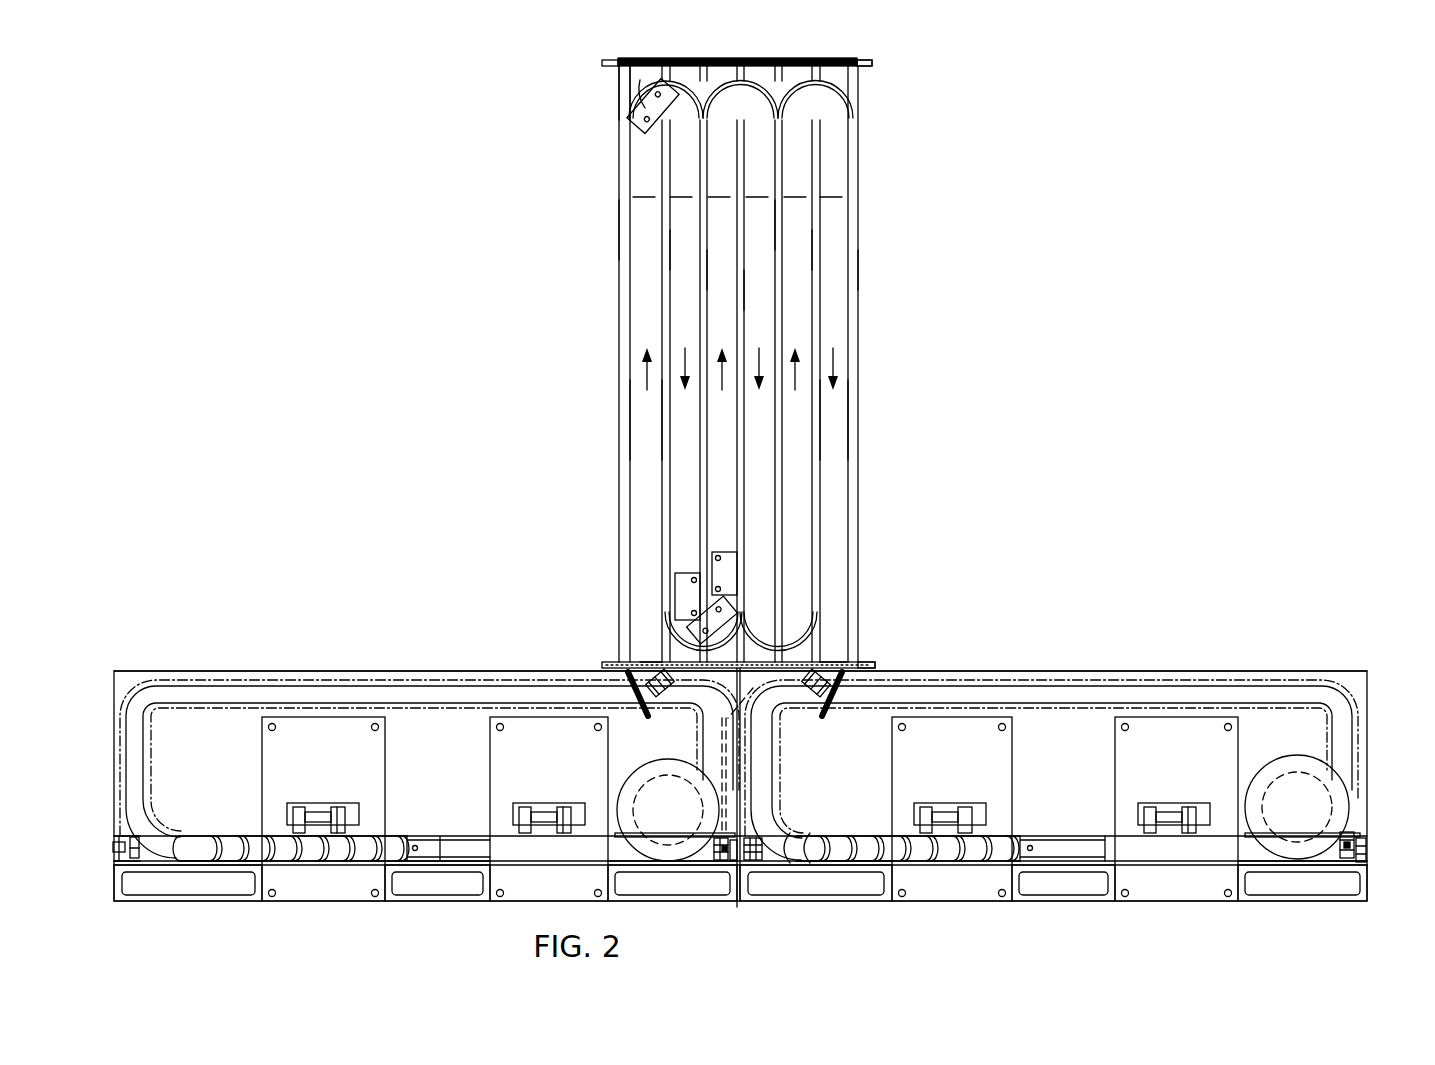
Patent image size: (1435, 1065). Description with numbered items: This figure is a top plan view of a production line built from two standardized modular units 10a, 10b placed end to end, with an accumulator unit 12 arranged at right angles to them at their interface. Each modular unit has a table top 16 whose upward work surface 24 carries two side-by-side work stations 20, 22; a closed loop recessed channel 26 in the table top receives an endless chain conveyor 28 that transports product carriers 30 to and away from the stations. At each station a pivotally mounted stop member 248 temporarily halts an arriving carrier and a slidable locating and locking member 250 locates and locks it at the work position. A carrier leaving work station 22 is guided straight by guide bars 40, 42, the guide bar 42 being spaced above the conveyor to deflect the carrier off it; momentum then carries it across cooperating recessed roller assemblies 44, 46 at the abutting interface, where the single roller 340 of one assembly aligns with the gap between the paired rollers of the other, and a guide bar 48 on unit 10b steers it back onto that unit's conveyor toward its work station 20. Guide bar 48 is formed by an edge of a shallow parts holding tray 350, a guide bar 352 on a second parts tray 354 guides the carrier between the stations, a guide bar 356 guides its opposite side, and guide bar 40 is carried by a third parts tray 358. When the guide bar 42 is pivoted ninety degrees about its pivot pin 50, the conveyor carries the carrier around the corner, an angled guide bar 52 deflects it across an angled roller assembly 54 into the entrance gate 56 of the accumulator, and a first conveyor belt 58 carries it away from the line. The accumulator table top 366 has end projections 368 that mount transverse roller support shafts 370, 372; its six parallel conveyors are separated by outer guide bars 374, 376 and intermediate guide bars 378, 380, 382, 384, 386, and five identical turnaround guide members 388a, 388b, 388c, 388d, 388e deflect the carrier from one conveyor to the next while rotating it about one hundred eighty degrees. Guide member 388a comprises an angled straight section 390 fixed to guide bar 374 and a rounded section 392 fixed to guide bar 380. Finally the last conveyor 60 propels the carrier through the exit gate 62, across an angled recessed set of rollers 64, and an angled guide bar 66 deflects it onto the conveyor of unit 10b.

The first modular unit 10a is at (406, 632).
The successive modular unit 10b is at (1078, 634).
The accumulator unit 12 is at (755, 349).
The table top 16 is at (366, 665).
The work station 20 is at (394, 786).
The work station 22 is at (622, 764).
The work surface 24 is at (416, 739).
The recessed channel 26 is at (290, 696).
The endless chain conveyor 28 is at (207, 826).
The carrier 30 is at (430, 846).
The guide bar 40 is at (640, 866).
The pivotally mounted guide bar 42 is at (1302, 834).
The first roller assembly 44 is at (728, 862).
The second roller assembly 46 is at (102, 866).
The guide bar 48 is at (198, 863).
The pivot pin 50 is at (722, 834).
The angled guide bar 52 is at (646, 713).
The angled roller assembly 54 is at (674, 681).
The entrance gate 56 is at (648, 656).
The first conveyor belt 58 is at (650, 415).
The last conveyor 60 is at (836, 417).
The exit gate 62 is at (838, 656).
The angled recessed set of rollers 64 is at (838, 678).
The angled guide bar 66 is at (826, 711).
The stop member 248 is at (340, 815).
The locating and locking member 250 is at (322, 812).
The roller 340 is at (738, 900).
The parts holding tray 350 is at (138, 885).
The guide bar 352 is at (450, 868).
The second parts tray 354 is at (425, 884).
The guide bar 356 is at (446, 834).
The third parts tray 358 is at (670, 884).
The table top 366 is at (622, 86).
The end projections 368 is at (622, 62).
The roller support shaft 370 is at (866, 64).
The roller support shaft 372 is at (864, 663).
The outer guide bar 374 is at (622, 224).
The outer guide bar 376 is at (855, 270).
The intermediate guide bar 378 is at (668, 251).
The intermediate guide bar 380 is at (706, 270).
The intermediate guide bar 382 is at (743, 291).
The intermediate guide bar 384 is at (777, 226).
The intermediate guide bar 386 is at (814, 248).
The turnaround guide member 388a is at (678, 74).
The turnaround guide member 388b is at (750, 78).
The turnaround guide member 388c is at (810, 78).
The turnaround guide member 388d is at (700, 646).
The turnaround guide member 388e is at (780, 646).
The angled straight section 390 is at (654, 78).
The rounded section 392 is at (648, 122).